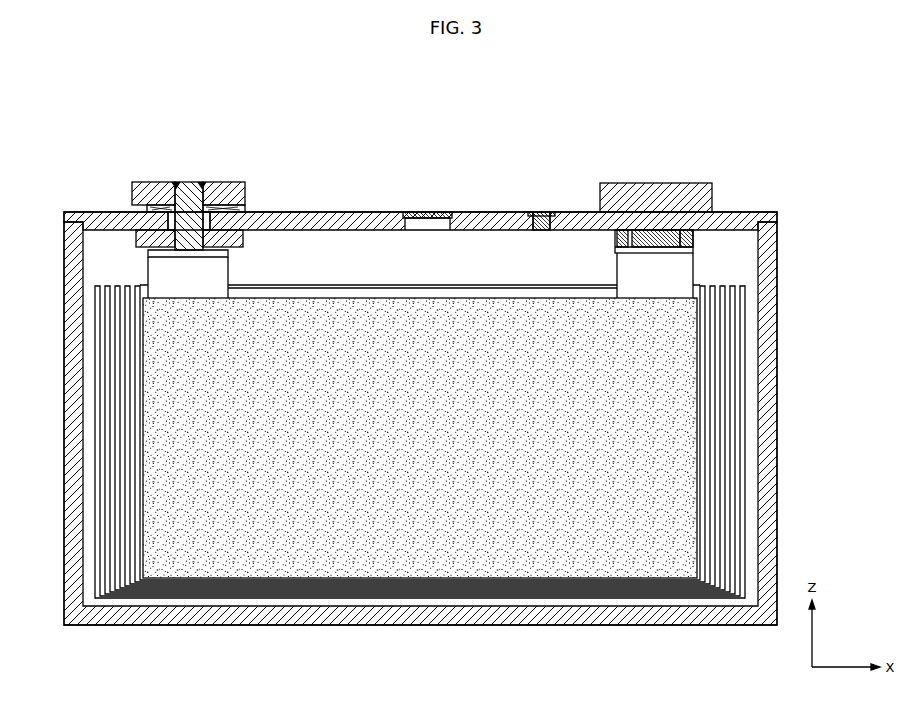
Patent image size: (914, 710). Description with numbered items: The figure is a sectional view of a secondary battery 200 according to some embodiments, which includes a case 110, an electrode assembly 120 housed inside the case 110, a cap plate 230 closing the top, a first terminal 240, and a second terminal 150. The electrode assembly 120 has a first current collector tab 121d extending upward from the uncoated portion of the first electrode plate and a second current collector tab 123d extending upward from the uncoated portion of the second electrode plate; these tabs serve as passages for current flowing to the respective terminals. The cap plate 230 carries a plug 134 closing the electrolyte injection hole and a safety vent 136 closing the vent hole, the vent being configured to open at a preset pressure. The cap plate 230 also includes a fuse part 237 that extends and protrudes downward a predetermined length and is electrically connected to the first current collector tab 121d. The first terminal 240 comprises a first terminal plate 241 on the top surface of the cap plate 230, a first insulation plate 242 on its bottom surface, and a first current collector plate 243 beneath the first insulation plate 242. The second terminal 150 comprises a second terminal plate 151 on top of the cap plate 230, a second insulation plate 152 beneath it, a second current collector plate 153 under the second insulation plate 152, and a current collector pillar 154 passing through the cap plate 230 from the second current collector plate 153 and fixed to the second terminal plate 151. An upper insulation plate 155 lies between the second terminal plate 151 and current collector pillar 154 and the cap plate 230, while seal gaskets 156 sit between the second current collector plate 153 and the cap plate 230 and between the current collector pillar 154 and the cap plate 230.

The secondary battery 200 is at (817, 145).
The case 110 is at (423, 618).
The electrode assembly 120 is at (277, 600).
The first current collector tab 121d is at (617, 272).
The second current collector tab 123d is at (218, 272).
The cap plate 230 is at (343, 212).
The plug 134 is at (543, 212).
The safety vent 136 is at (420, 212).
The second terminal 150 is at (183, 180).
The second terminal plate 151 is at (233, 182).
The second insulation plate 152 is at (135, 238).
The second current collector plate 153 is at (227, 256).
The current collector pillar 154 is at (190, 192).
The upper insulation plate 155 is at (242, 210).
The seal gaskets 156 is at (172, 210).
The fuse part 237 is at (617, 237).
The first terminal 240 is at (695, 194).
The first terminal plate 241 is at (630, 183).
The first insulation plate 242 is at (693, 242).
The first current collector plate 243 is at (693, 251).